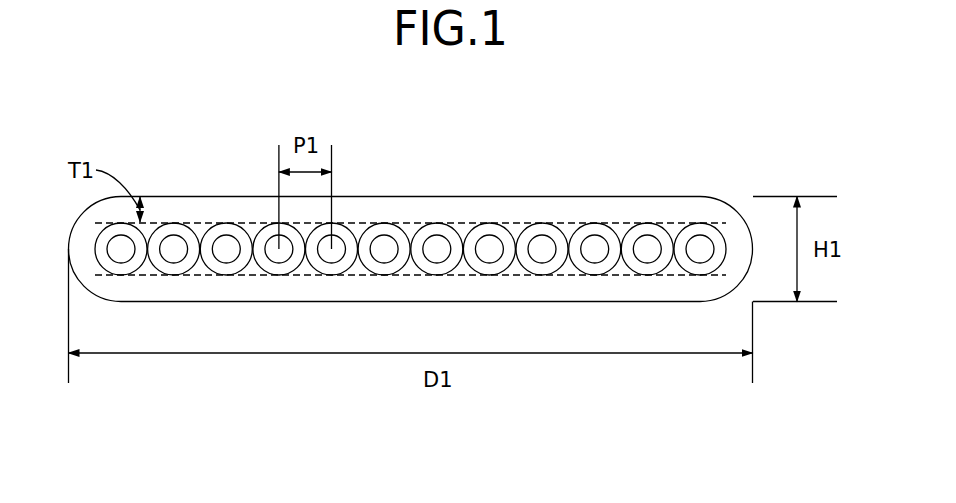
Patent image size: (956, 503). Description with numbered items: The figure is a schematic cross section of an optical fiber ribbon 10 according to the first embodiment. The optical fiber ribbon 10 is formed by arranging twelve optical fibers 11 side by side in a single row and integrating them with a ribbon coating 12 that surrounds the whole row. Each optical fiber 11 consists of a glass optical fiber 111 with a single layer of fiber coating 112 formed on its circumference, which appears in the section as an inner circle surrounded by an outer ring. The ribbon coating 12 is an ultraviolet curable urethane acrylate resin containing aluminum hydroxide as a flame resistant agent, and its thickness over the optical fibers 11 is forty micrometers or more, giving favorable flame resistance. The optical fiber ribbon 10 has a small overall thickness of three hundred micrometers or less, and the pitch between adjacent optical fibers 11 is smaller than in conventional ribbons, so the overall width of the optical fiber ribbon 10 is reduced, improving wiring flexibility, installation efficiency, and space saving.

The optical fiber ribbon 10 is at (433, 200).
The optical fiber 11 is at (410, 240).
The ribbon coating 12 is at (534, 208).
The glass optical fiber 111 is at (595, 247).
The fiber coating 112 is at (591, 267).